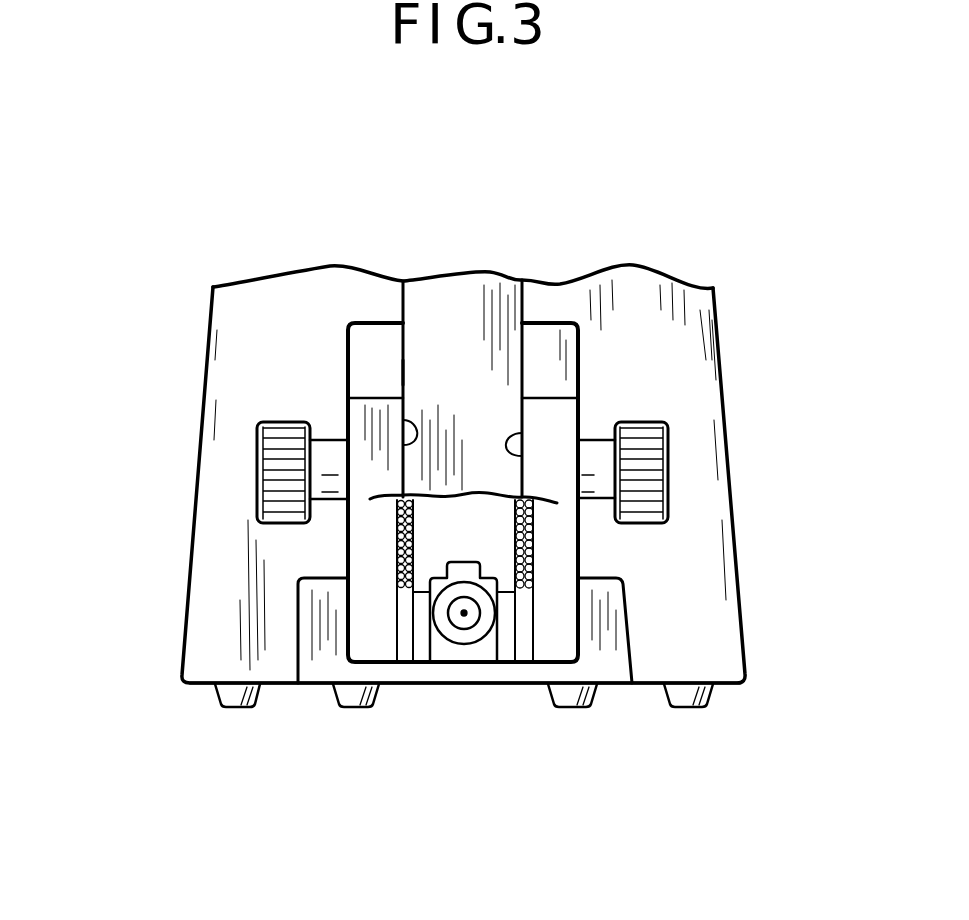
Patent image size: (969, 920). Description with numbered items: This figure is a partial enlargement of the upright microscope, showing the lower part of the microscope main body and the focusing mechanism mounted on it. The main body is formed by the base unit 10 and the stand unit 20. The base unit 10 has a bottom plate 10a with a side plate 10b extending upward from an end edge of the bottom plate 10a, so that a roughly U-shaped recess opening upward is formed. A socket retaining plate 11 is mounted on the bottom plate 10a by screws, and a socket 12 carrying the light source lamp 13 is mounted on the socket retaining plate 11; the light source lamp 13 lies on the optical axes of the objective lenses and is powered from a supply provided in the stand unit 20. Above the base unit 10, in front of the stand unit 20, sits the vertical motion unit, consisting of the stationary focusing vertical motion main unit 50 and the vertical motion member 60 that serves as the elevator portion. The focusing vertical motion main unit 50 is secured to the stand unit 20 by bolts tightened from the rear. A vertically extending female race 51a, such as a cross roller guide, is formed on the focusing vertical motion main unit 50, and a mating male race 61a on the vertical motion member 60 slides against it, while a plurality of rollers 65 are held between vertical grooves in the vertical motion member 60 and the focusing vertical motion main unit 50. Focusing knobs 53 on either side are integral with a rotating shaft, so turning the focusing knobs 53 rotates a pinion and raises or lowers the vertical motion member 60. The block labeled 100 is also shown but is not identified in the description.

The base unit 10 is at (652, 773).
The bottom plate 10a is at (395, 677).
The side plate 10b is at (308, 621).
The socket retaining plate 11 is at (440, 650).
The socket 12 is at (480, 627).
The light source lamp 13 is at (463, 618).
The stand unit 20 is at (643, 303).
The focusing vertical motion main unit 50 is at (373, 553).
The female race 51a is at (770, 363).
The focusing knobs 53 is at (787, 497).
The vertical motion member 60 is at (463, 297).
The male race 61a is at (527, 415).
The rollers 65 is at (780, 633).
The right support block 100 is at (785, 681).